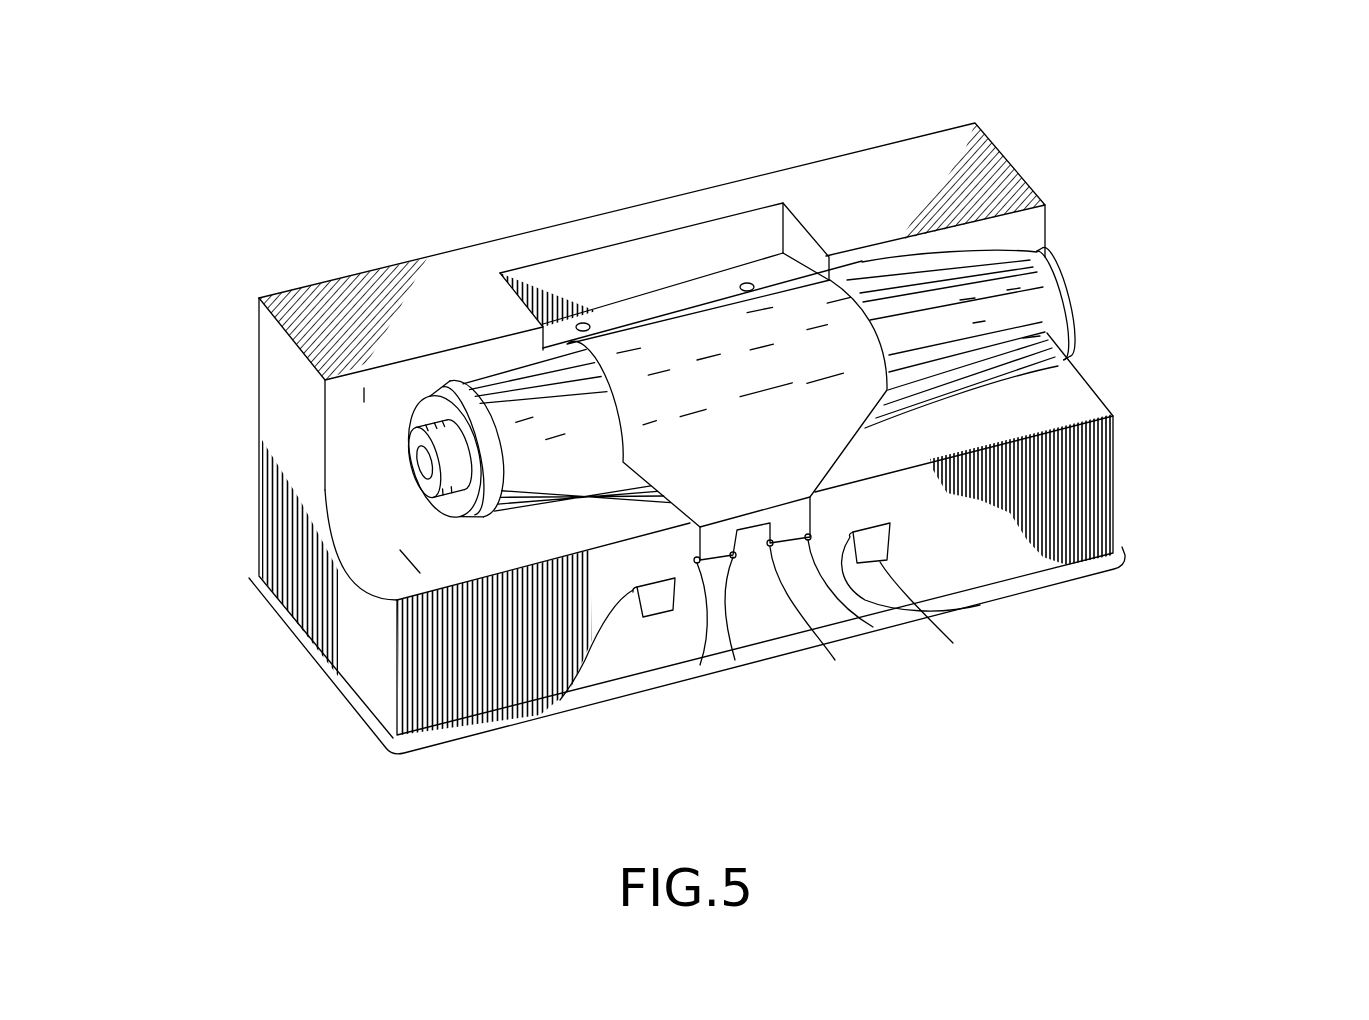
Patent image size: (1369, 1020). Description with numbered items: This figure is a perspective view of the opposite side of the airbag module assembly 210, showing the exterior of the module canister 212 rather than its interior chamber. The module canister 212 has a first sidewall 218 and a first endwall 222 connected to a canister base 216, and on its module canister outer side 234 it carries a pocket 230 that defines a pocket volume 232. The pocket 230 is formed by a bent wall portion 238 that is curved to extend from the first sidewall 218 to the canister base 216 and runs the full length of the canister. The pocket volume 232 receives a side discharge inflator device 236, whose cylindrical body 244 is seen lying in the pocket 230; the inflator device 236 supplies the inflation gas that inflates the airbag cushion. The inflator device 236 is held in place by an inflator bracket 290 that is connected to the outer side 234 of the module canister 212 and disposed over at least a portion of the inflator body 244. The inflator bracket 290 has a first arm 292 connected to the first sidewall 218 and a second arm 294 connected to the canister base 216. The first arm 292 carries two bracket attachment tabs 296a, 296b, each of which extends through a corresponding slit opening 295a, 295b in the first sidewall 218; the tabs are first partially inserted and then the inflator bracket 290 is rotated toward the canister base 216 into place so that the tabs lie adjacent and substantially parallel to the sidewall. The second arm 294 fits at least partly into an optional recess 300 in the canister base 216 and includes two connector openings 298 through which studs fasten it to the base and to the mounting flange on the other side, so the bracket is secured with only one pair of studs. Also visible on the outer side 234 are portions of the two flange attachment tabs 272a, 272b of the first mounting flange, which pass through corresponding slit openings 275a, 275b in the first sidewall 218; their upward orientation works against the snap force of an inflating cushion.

The airbag module assembly 210 is at (1180, 186).
The module canister 212 is at (257, 447).
The canister base 216 is at (395, 313).
The first sidewall 218 is at (987, 540).
The first endwall 222 is at (292, 390).
The pocket 230 is at (395, 539).
The pocket volume 232 is at (1133, 338).
The module canister outer side 234 is at (1120, 468).
The inflator device 236 is at (1070, 298).
The bent wall portion 238 is at (350, 497).
The cylindrical body 244 is at (997, 287).
The inflator bracket 290 is at (807, 330).
The first arm 292 is at (655, 498).
The second arm 294 is at (680, 302).
The connector openings 298 is at (585, 323).
The recess 300 is at (550, 248).
The flange attachment tab 272a is at (645, 617).
The flange attachment tab 272b is at (980, 605).
The slit opening 275a is at (560, 700).
The slit opening 275b is at (953, 643).
The slit opening 295a is at (700, 665).
The slit opening 295b is at (873, 627).
The bracket attachment tab 296a is at (735, 660).
The bracket attachment tab 296b is at (835, 660).